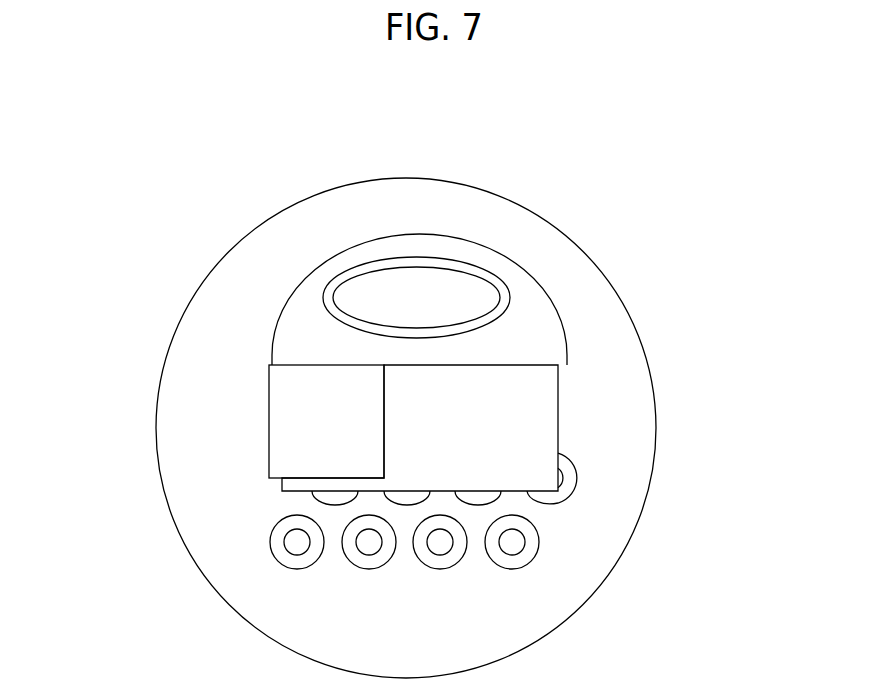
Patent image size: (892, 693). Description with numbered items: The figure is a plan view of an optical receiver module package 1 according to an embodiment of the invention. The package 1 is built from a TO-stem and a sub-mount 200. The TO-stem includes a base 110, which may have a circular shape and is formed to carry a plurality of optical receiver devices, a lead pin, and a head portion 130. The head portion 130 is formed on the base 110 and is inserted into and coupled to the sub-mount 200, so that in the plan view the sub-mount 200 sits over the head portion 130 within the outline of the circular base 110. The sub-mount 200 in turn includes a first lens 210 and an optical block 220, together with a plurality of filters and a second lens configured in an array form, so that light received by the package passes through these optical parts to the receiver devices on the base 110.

The optical receiver module package 1 is at (592, 223).
The base 110 is at (655, 468).
The head portion 130 is at (412, 293).
The sub-mount 200 is at (528, 344).
The first lens 210 is at (328, 427).
The optical block 220 is at (515, 425).